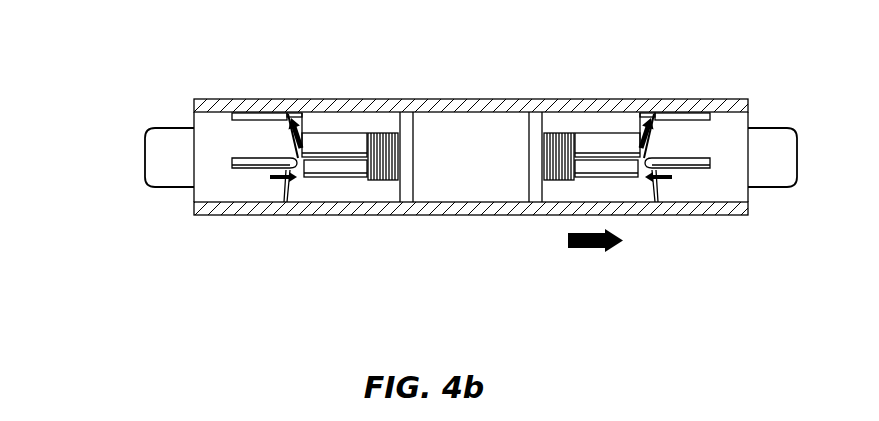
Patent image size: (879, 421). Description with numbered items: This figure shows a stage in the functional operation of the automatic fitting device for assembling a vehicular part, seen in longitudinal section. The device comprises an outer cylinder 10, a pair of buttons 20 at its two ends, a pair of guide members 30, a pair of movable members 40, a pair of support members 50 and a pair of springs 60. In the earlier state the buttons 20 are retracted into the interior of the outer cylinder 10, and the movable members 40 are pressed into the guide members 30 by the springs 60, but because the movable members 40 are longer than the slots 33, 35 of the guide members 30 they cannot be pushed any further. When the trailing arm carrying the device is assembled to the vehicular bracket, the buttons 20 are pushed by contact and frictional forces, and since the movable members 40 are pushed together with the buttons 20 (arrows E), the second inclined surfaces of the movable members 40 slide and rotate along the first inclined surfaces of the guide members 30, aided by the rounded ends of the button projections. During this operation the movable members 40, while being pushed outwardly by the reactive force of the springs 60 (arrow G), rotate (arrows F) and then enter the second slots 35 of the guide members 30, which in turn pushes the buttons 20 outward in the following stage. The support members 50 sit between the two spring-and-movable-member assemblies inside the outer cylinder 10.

The outer cylinder 10 is at (455, 210).
The button 20 is at (157, 157).
The guide member 30 is at (215, 190).
The slot 33 is at (250, 168).
The second slot 35 is at (245, 113).
The movable member 40 is at (320, 140).
The support member 50 is at (420, 130).
The spring 60 is at (372, 133).
The arrows indicating rotation of movable members F is at (302, 108).
The arrows indicating pushing of movable members E is at (277, 183).
The arrow indicating spring reactive force G is at (587, 250).